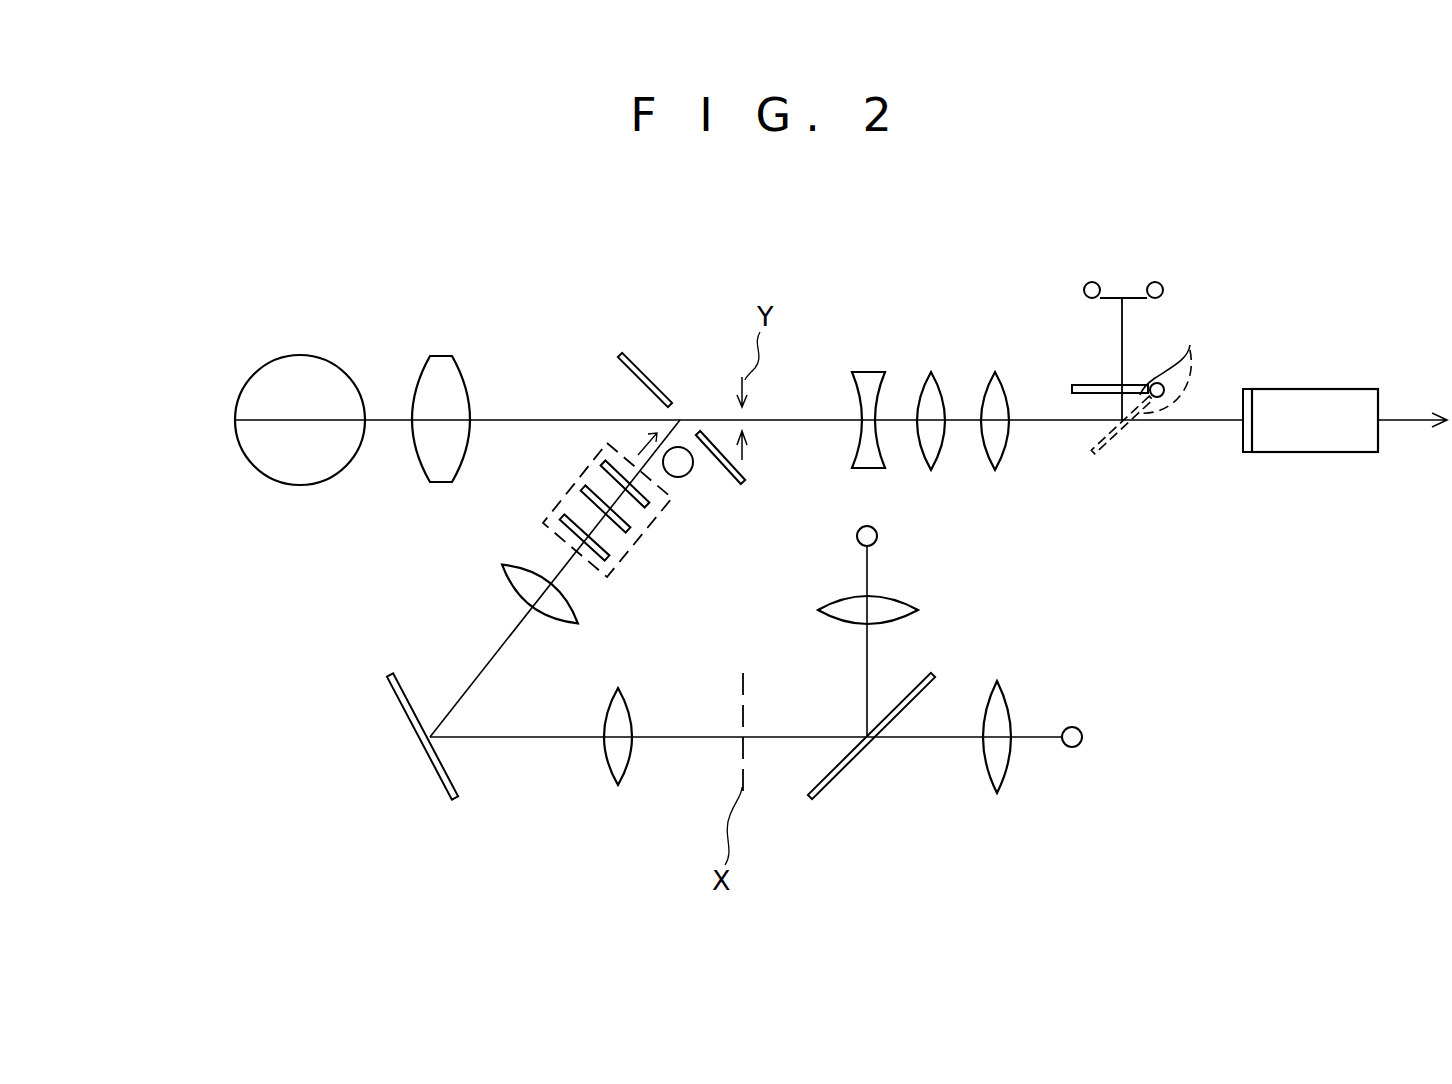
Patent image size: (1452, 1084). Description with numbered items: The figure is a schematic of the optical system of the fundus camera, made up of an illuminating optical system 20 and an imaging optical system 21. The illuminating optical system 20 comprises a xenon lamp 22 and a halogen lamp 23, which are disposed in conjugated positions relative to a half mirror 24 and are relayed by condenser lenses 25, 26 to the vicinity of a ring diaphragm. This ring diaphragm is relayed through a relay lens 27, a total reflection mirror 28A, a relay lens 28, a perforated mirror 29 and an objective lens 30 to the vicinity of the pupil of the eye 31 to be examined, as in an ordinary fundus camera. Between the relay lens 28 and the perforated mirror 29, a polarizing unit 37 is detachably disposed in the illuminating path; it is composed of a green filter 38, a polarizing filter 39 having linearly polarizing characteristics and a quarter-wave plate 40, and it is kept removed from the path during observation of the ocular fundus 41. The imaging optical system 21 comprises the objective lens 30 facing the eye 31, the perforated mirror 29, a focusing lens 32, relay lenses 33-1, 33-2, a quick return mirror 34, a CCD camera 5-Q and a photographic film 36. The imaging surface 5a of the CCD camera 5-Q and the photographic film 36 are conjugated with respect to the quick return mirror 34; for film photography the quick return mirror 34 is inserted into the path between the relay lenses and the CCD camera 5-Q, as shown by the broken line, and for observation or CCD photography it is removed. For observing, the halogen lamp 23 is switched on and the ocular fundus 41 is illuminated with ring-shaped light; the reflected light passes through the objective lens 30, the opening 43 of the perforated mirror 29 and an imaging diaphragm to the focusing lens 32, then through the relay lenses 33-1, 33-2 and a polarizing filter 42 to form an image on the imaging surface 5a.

The illuminating optical system 20 is at (790, 836).
The imaging optical system 21 is at (1047, 325).
The xenon lamp 22 is at (1082, 735).
The halogen lamp 23 is at (877, 533).
The half mirror 24 is at (863, 752).
The condenser lens 25 is at (1013, 712).
The condenser lens 26 is at (918, 610).
The relay lens 27 is at (612, 770).
The relay lens 28 is at (520, 564).
The total reflection mirror 28A is at (438, 777).
The perforated mirror 29 is at (641, 370).
The objective lens 30 is at (445, 356).
The eye to be examined 31 is at (310, 355).
The focusing lens 32 is at (868, 372).
The relay lens 33-1 is at (938, 388).
The relay lens 33-2 is at (997, 375).
The quick return mirror 34 is at (1190, 345).
The photographic film 36 is at (1122, 298).
The polarizing unit 37 is at (640, 541).
The green filter 38 is at (598, 556).
The polarizing filter 39 is at (632, 518).
The quarter-wave plate 40 is at (648, 492).
The ocular fundus 41 is at (235, 420).
The polarizing filter 42 is at (1243, 440).
The opening of the perforated mirror 43 is at (680, 408).
The imaging surface 5a is at (1243, 400).
The CCD camera 5-Q is at (1318, 389).